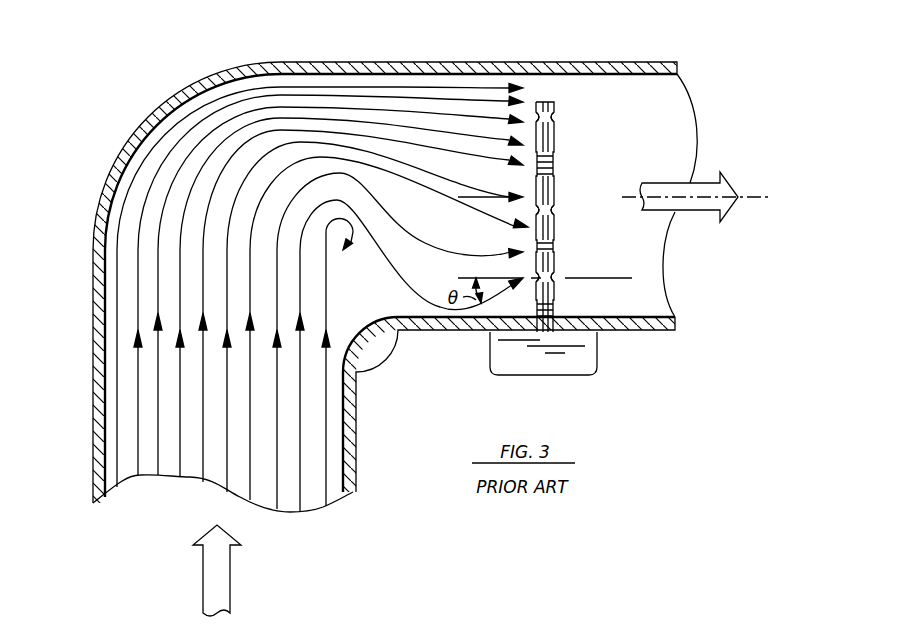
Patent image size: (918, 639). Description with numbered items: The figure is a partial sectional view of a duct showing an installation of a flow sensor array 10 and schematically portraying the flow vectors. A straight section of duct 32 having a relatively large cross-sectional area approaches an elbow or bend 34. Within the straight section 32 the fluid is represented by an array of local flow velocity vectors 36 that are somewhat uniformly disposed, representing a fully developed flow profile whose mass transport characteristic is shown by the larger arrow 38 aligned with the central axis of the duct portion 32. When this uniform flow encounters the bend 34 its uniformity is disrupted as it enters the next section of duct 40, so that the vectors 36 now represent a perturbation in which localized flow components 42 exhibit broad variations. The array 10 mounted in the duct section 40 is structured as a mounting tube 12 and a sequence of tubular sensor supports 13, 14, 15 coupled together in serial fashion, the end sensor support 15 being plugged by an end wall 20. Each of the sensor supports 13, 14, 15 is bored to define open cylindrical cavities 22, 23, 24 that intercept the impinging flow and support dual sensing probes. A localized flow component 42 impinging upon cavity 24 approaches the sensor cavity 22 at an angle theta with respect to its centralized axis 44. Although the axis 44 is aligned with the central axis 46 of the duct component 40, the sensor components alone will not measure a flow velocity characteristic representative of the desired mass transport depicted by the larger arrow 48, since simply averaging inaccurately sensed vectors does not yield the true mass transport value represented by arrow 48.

The array of flow sensors 10 is at (551, 227).
The mounting tube 12 is at (556, 322).
The tubular sensor support 13 is at (553, 256).
The tubular sensor support 14 is at (553, 178).
The end sensor support 15 is at (556, 142).
The end wall 20 is at (550, 102).
The cavity 22 is at (557, 280).
The cavity 23 is at (553, 200).
The cavity 24 is at (555, 124).
The straight section of duct 32 is at (93, 475).
The elbow or bend 34 is at (150, 108).
The local flow velocity vectors 36 is at (148, 478).
The larger arrow 38 is at (231, 591).
The next section of duct 40 is at (542, 62).
The localized flow component 42 is at (334, 224).
The centralized axis 44 is at (596, 278).
The central axis of duct component 46 is at (757, 197).
The larger arrow 48 is at (725, 213).